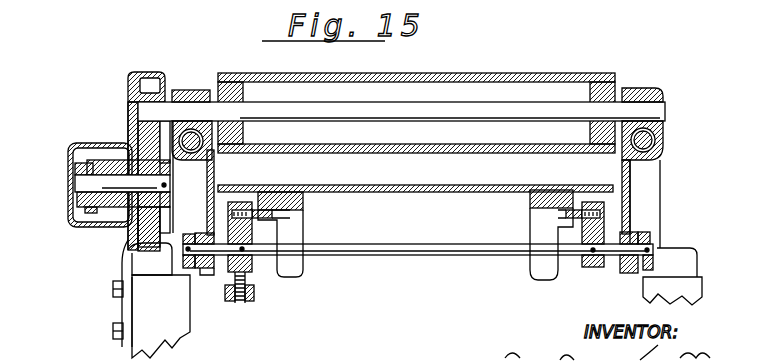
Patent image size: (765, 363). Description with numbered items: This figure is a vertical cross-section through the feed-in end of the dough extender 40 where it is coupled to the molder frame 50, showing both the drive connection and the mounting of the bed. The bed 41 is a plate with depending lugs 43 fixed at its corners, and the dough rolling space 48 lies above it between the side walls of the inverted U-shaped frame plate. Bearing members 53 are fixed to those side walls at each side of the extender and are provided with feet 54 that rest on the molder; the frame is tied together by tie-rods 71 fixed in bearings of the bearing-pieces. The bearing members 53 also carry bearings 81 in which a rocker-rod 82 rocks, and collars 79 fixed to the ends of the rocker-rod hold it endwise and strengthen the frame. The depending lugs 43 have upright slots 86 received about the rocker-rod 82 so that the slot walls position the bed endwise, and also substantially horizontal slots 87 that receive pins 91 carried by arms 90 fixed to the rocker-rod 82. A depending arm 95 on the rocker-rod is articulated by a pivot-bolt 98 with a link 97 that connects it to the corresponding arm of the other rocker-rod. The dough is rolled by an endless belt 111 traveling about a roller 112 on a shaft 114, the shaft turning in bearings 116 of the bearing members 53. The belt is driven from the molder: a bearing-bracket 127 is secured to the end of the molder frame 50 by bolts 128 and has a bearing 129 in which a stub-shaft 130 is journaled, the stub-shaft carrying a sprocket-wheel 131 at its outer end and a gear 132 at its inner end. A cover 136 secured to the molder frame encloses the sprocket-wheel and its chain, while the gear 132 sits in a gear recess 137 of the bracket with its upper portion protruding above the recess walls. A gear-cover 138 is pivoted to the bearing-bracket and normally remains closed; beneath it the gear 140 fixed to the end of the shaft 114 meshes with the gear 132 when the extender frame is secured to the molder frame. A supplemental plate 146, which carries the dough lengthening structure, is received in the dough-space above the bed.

The dough extender 40 is at (634, 84).
The bed 41 is at (405, 193).
The depending lugs 43 is at (303, 235).
The dough rolling space 48 is at (470, 173).
The molder frame 50 is at (173, 333).
The bearing members 53 is at (215, 180).
The feet 54 is at (698, 268).
The tie-rods 71 is at (194, 153).
The collars 79 is at (187, 268).
The bearings 81 is at (210, 276).
The rocker-rod 82 is at (385, 255).
The upright slots 86 is at (303, 223).
The horizontal slots 87 is at (282, 214).
The arms 90 is at (250, 270).
The pins 91 is at (270, 208).
The depending arm 95 is at (246, 303).
The link 97 is at (236, 304).
The pivot-bolt 98 is at (229, 302).
The endless belt 111 is at (440, 75).
The roller 112 is at (551, 76).
The shaft 114 is at (660, 109).
The bearings 116 is at (194, 90).
The bearing-bracket 127 is at (128, 245).
The bolts 128 is at (114, 293).
The bearing 129 is at (110, 160).
The stub-shaft 130 is at (78, 185).
The sprocket-wheel 131 is at (82, 165).
The gear 132 is at (140, 232).
The cover 136 is at (70, 214).
The gear recess 137 is at (147, 240).
The gear-cover 138 is at (147, 72).
The gear 140 is at (160, 80).
The supplemental plate 146 is at (361, 186).